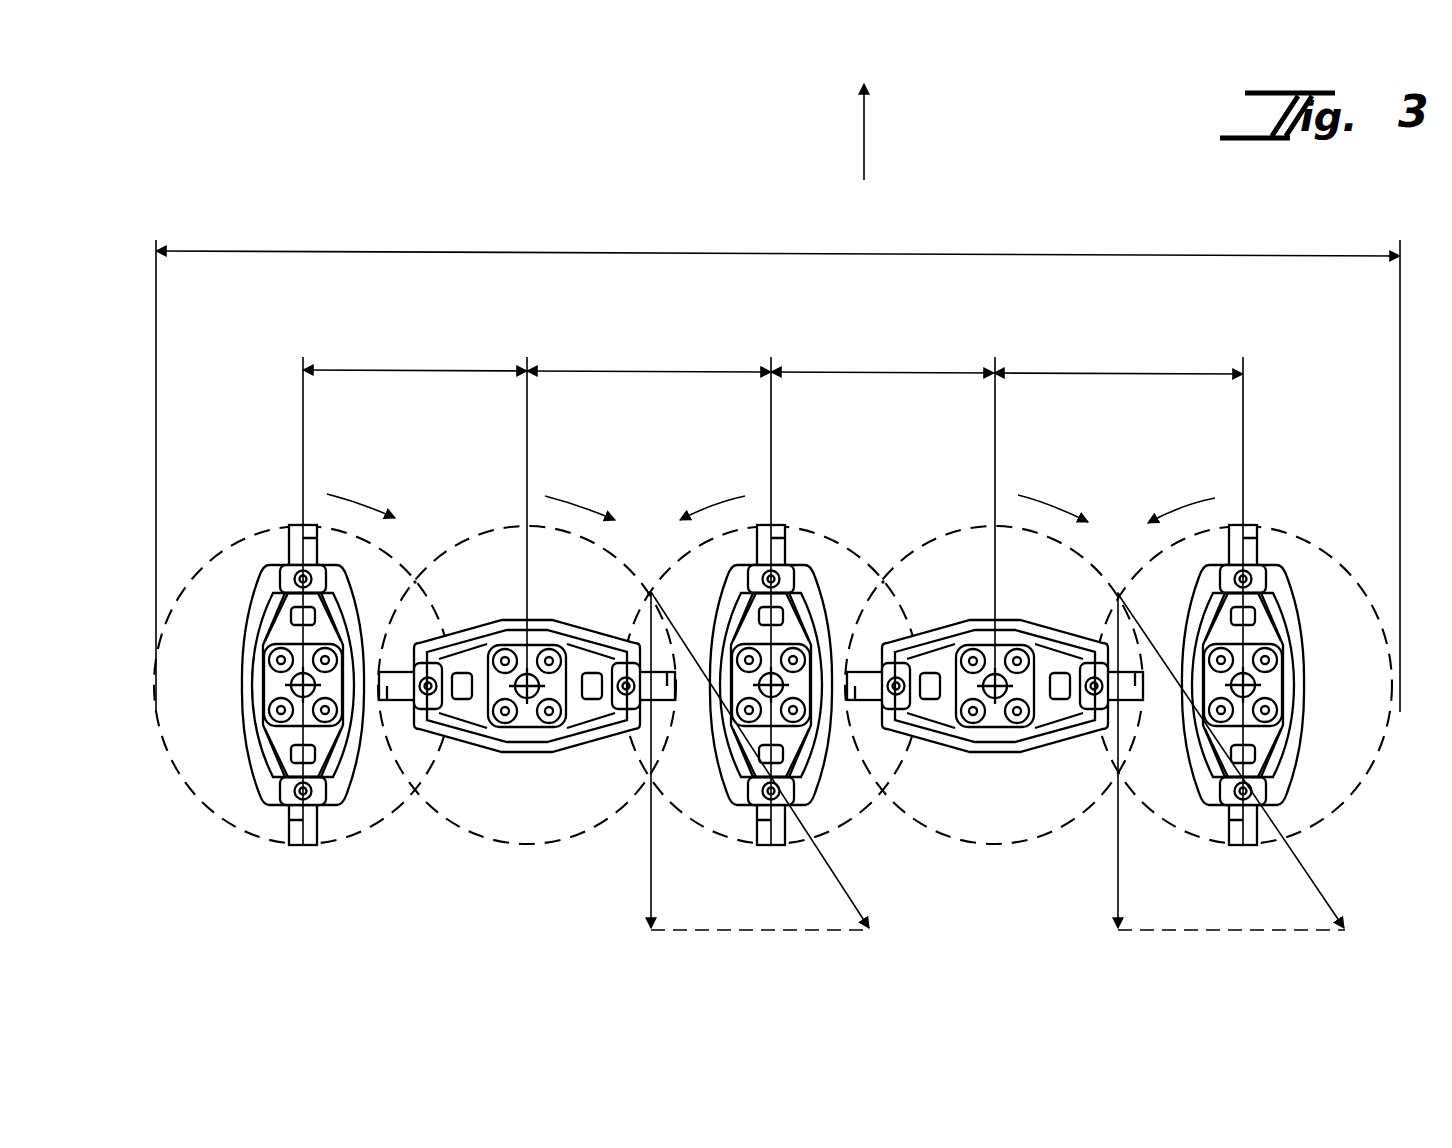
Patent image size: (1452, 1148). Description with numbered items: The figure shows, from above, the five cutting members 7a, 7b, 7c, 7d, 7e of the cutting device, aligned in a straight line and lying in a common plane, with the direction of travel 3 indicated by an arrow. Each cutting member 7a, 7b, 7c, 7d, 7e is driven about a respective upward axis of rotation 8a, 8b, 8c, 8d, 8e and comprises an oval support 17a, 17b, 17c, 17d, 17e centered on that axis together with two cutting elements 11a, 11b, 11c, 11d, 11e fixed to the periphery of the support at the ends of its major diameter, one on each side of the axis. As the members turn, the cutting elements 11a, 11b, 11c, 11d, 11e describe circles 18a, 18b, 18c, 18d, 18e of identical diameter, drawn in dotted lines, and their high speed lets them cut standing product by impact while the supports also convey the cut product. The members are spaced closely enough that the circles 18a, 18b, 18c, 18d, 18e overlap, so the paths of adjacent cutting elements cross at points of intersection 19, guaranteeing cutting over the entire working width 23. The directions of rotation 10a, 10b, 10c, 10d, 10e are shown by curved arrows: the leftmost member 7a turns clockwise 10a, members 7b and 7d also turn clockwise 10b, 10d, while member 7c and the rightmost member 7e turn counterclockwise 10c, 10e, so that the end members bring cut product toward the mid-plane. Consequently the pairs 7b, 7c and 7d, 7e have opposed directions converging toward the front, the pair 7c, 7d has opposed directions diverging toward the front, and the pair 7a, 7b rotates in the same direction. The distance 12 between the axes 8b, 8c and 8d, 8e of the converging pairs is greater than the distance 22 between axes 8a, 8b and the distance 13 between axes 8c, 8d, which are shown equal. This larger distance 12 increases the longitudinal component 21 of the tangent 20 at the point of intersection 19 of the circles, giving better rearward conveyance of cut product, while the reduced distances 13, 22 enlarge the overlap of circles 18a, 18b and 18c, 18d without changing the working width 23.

The direction of travel 3 is at (864, 147).
The cutting member 7a is at (245, 565).
The cutting member 7b is at (515, 605).
The cutting member 7c is at (816, 560).
The cutting member 7d is at (979, 613).
The cutting member 7e is at (1296, 565).
The axis of rotation 8a is at (296, 679).
The axis of rotation 8b is at (540, 698).
The axis of rotation 8c is at (785, 669).
The axis of rotation 8d is at (1020, 703).
The axis of rotation 8e is at (1257, 681).
The direction of rotation 10a is at (360, 497).
The direction of rotation 10b is at (573, 498).
The direction of rotation 10c is at (720, 497).
The direction of rotation 10d is at (1040, 497).
The direction of rotation 10e is at (1192, 500).
The cutting element 11a is at (290, 545).
The cutting element 11b is at (405, 702).
The cutting element 11c is at (785, 543).
The cutting element 11d is at (895, 704).
The cutting element 11e is at (1260, 544).
The distance 12 is at (645, 371).
The distance 13 is at (892, 372).
The support 17a is at (245, 763).
The support 17b is at (470, 752).
The support 17c is at (712, 640).
The support 17d is at (1075, 625).
The support 17e is at (1300, 780).
The circle 18a is at (160, 745).
The circle 18b is at (455, 841).
The circle 18c is at (878, 850).
The circle 18d is at (1000, 843).
The circle 18e is at (1390, 770).
The point of intersection 19 is at (417, 580).
The tangent 20 is at (845, 893).
The longitudinal component 21 is at (650, 875).
The distance 22 is at (425, 370).
The working width 23 is at (771, 251).